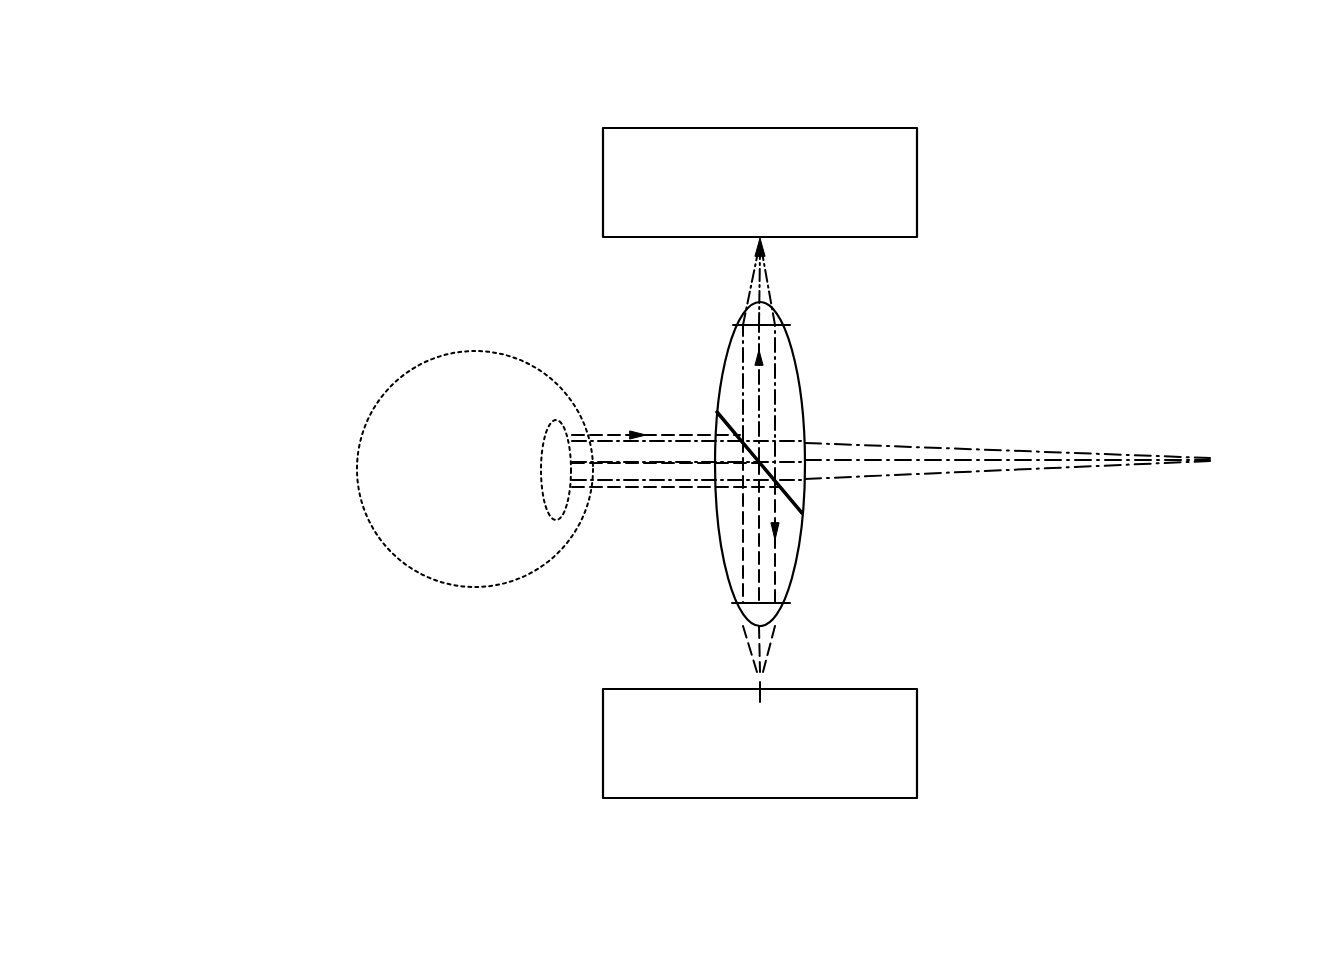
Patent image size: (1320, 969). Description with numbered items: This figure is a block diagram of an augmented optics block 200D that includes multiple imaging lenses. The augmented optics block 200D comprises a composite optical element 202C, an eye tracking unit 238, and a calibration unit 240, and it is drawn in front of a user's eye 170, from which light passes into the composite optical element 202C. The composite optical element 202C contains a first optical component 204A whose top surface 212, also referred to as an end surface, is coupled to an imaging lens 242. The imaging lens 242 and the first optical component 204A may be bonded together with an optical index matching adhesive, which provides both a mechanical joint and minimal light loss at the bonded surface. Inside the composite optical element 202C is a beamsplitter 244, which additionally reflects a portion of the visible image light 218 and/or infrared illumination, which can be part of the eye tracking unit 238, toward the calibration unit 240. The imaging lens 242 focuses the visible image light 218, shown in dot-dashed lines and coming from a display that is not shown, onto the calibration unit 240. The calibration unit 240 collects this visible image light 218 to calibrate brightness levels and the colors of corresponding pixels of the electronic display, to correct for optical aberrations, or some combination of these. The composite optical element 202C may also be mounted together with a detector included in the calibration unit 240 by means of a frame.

The augmented optics block 200D is at (140, 66).
The eye 170 is at (425, 435).
The calibration unit 240 is at (780, 210).
The eye tracking unit 238 is at (780, 771).
The imaging lens 242 is at (758, 314).
The top surface 212 is at (787, 324).
The first optical component 204A is at (805, 408).
The visible image light 218 is at (1015, 460).
The composite optical element 202C is at (857, 388).
The beamsplitter 244 is at (663, 536).